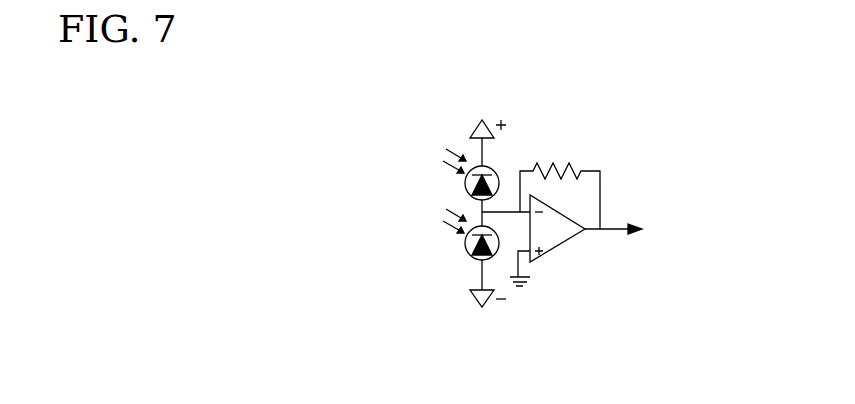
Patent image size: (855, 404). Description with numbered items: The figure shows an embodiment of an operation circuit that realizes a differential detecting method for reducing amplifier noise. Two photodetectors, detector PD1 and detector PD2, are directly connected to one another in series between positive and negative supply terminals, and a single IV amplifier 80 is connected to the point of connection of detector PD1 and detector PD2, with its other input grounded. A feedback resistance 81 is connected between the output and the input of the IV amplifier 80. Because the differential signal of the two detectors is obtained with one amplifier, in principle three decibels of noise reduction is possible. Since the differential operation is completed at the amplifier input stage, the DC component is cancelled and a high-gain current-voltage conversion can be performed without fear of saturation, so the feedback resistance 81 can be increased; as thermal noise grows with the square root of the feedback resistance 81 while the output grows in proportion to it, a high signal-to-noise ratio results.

The IV amplifier 80 is at (560, 248).
The feedback resistance 81 is at (567, 163).
The detector PD1 is at (422, 174).
The detector PD2 is at (422, 234).